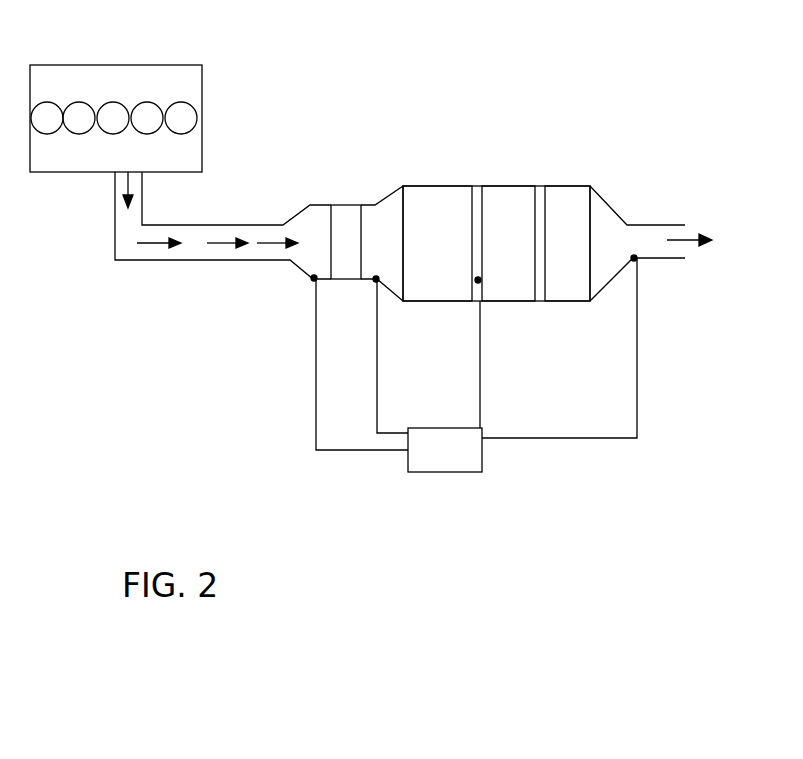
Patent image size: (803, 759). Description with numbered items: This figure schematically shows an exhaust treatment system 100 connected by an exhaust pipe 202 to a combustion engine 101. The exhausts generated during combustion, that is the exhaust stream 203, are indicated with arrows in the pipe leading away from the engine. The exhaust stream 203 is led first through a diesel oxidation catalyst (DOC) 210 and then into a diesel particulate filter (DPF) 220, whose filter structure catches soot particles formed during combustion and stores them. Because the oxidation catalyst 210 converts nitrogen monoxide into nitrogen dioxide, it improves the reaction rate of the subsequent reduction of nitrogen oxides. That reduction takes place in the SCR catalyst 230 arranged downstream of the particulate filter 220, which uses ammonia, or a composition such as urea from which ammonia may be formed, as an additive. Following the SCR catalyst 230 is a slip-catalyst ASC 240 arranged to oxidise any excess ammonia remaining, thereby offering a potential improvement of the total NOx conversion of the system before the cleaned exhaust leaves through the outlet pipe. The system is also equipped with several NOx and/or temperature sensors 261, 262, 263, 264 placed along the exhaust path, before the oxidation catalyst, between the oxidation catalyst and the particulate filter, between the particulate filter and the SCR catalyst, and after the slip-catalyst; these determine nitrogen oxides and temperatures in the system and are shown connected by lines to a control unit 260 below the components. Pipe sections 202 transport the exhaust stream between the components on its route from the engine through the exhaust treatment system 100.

The exhaust aftertreatment system 100 is at (475, 92).
The combustion engine 101 is at (193, 88).
The exhaust pipe 202 is at (177, 260).
The exhaust stream 203 is at (263, 233).
The diesel oxidation catalyst (DOC) 210 is at (353, 210).
The diesel particulate filter (DPF) 220 is at (452, 193).
The SCR catalyst 230 is at (530, 202).
The slip-catalyst ASC 240 is at (585, 200).
The controller 260 is at (442, 463).
The NOx and/or temperature sensor 261 is at (310, 282).
The NOx and/or temperature sensor 262 is at (375, 280).
The NOx and/or temperature sensor 263 is at (480, 283).
The NOx and/or temperature sensor 264 is at (638, 258).